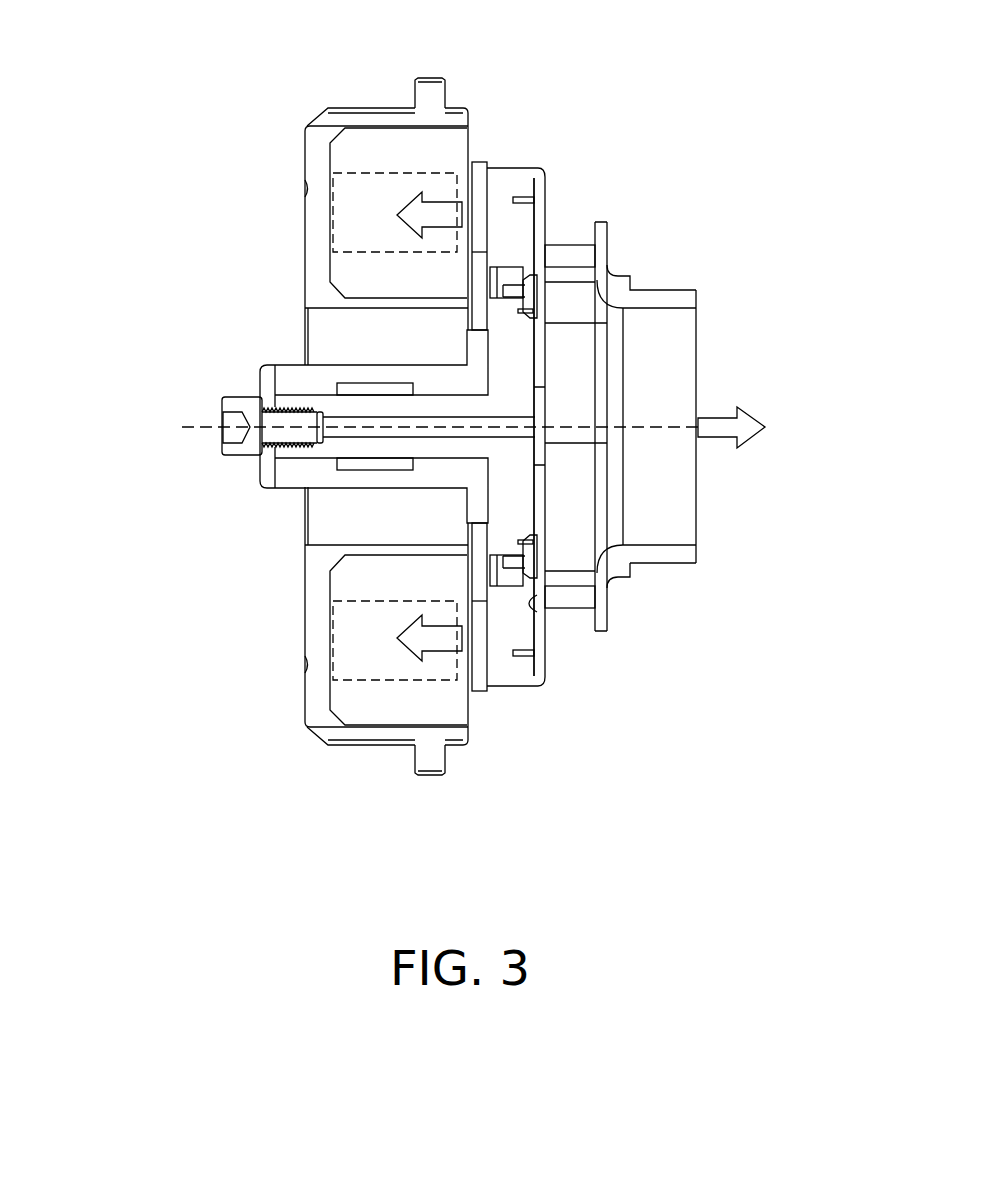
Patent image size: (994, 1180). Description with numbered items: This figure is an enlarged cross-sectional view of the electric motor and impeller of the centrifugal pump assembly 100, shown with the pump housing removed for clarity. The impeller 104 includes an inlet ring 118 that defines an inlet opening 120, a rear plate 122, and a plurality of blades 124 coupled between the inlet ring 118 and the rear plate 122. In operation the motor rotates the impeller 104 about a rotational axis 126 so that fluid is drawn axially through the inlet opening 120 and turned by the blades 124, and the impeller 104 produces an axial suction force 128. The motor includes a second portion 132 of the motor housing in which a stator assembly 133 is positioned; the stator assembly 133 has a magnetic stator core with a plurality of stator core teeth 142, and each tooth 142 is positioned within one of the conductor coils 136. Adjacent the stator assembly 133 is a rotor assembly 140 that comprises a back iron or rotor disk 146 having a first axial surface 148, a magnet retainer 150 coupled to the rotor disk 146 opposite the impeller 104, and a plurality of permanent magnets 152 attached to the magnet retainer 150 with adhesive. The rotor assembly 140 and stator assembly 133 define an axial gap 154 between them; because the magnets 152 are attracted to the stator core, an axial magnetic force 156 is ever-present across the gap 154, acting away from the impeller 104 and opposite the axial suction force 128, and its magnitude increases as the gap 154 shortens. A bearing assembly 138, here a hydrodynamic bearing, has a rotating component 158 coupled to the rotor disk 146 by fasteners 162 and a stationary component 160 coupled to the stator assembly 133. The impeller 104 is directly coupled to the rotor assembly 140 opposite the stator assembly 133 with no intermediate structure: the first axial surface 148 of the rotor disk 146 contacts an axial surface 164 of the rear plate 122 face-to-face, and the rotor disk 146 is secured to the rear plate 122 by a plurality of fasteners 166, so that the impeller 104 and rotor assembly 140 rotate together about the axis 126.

The centrifugal pump assembly 100 is at (436, 452).
The impeller 104 is at (660, 280).
The inlet ring 118 is at (675, 564).
The inlet opening 120 is at (665, 337).
The rear plate 122 is at (542, 232).
The blades 124 is at (580, 266).
The rotational axis 126 is at (213, 426).
The axial suction force 128 is at (725, 418).
The second portion 132 is at (315, 123).
The stator assembly 133 is at (329, 756).
The conductor coils 136 is at (353, 145).
The bearing assembly 138 is at (292, 492).
The rotor assembly 140 is at (537, 711).
The stator core teeth 142 is at (337, 622).
The rotor disk 146 is at (508, 172).
The first axial surface 148 is at (540, 625).
The magnet retainer 150 is at (536, 436).
The permanent magnets 152 is at (480, 163).
The axial gap 154 is at (474, 700).
The axial magnetic force 156 is at (415, 227).
The rotating component 158 is at (527, 508).
The stationary component 160 is at (483, 482).
The fasteners 162 is at (540, 298).
The axial surface 164 is at (612, 596).
The fasteners 166 is at (547, 202).